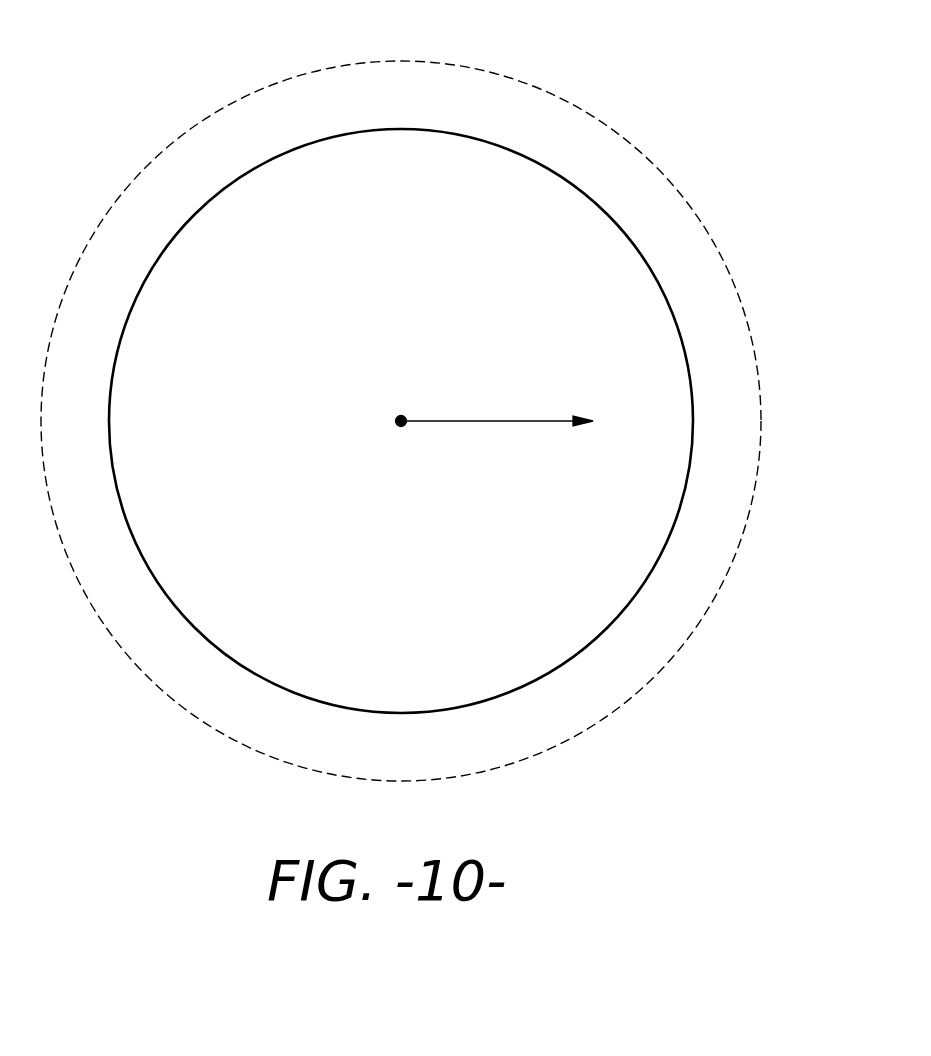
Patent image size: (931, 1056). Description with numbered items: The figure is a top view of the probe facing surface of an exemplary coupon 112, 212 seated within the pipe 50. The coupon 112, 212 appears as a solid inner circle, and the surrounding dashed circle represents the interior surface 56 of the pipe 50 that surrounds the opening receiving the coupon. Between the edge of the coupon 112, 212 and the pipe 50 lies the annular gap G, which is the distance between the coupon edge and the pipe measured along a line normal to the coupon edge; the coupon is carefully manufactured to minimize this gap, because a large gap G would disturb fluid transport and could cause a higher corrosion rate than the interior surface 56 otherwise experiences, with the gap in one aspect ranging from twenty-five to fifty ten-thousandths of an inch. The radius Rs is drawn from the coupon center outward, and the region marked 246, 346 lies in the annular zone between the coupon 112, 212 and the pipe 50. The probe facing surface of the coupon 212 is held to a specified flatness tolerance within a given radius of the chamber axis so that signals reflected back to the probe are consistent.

The pipe 50 is at (425, 57).
The annular gap G is at (515, 148).
The coupon 112 is at (401, 421).
The coupon 212 is at (285, 294).
The gap region 246 is at (607, 275).
The gap region 346 is at (577, 266).
The interior surface 56 is at (728, 397).
The rotor radius Rs is at (495, 443).